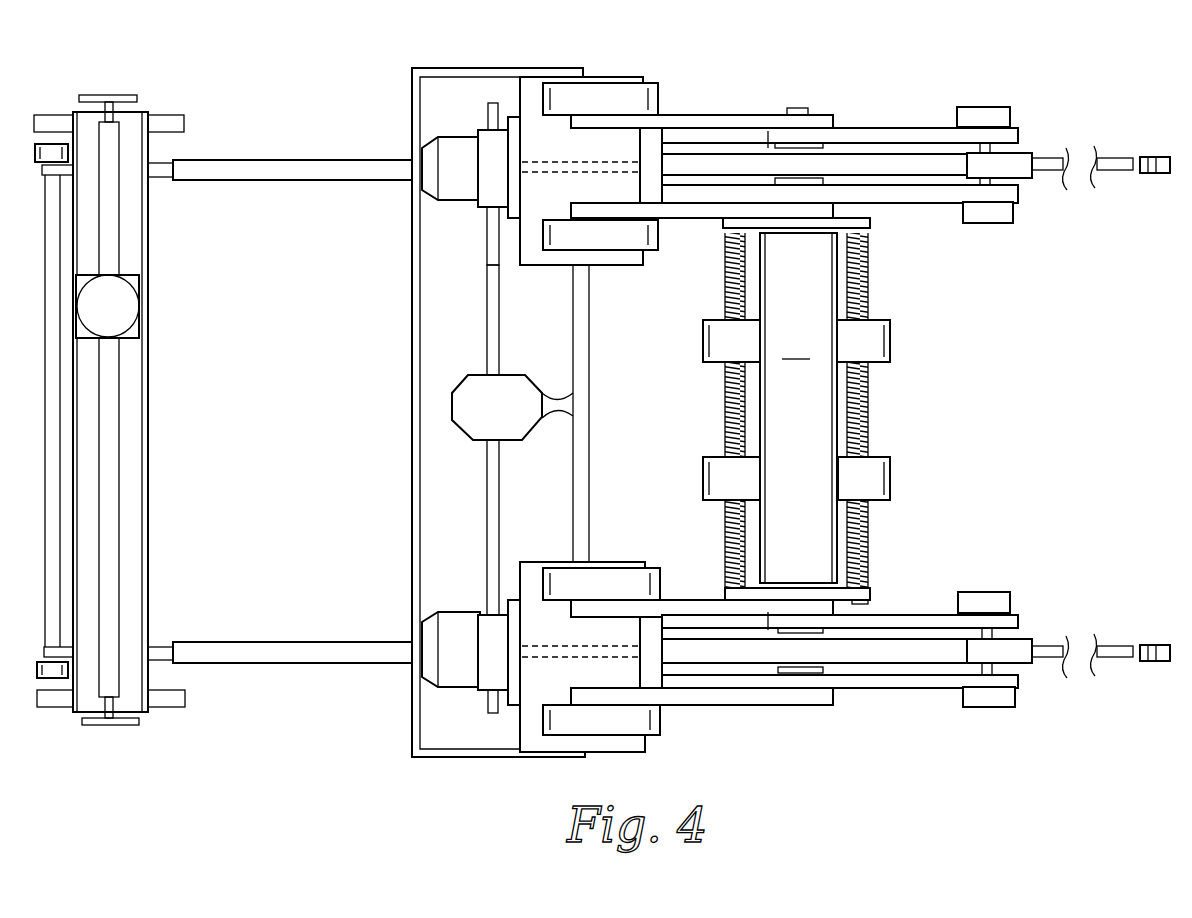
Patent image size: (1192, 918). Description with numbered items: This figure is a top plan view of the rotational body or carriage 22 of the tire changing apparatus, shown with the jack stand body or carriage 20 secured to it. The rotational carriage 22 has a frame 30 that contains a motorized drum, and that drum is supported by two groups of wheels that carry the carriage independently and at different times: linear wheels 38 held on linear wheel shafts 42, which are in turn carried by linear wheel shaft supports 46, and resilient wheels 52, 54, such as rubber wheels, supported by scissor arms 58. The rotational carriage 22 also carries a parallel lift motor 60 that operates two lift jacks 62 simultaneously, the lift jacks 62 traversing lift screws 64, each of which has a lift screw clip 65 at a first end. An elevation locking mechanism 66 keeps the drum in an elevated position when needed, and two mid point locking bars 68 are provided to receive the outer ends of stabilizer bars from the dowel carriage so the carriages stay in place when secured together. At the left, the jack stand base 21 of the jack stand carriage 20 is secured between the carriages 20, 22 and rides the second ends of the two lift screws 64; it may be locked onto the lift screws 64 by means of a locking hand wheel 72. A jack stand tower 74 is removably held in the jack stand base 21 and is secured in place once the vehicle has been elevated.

The jack stand body or carriage 20 is at (135, 420).
The jack stand base 21 is at (148, 240).
The rotational body or carriage 22 is at (724, 58).
The frame 30 is at (859, 411).
The linear wheel 38 is at (703, 340).
The linear wheel shaft 42 is at (868, 290).
The linear wheel shaft support 46 is at (870, 223).
The resilient wheel 52 is at (1005, 108).
The resilient wheel 54 is at (658, 100).
The scissor arm 58 is at (842, 116).
The parallel lift motor 60 is at (452, 420).
The lift jack 62 is at (440, 137).
The lift screw 64 is at (258, 160).
The lift screw clip 65 is at (1158, 157).
The elevation locking mechanism 66 is at (799, 404).
The mid point locking bar 68 is at (977, 153).
The locking hand wheel 72 is at (97, 96).
The jack stand tower 74 is at (139, 325).